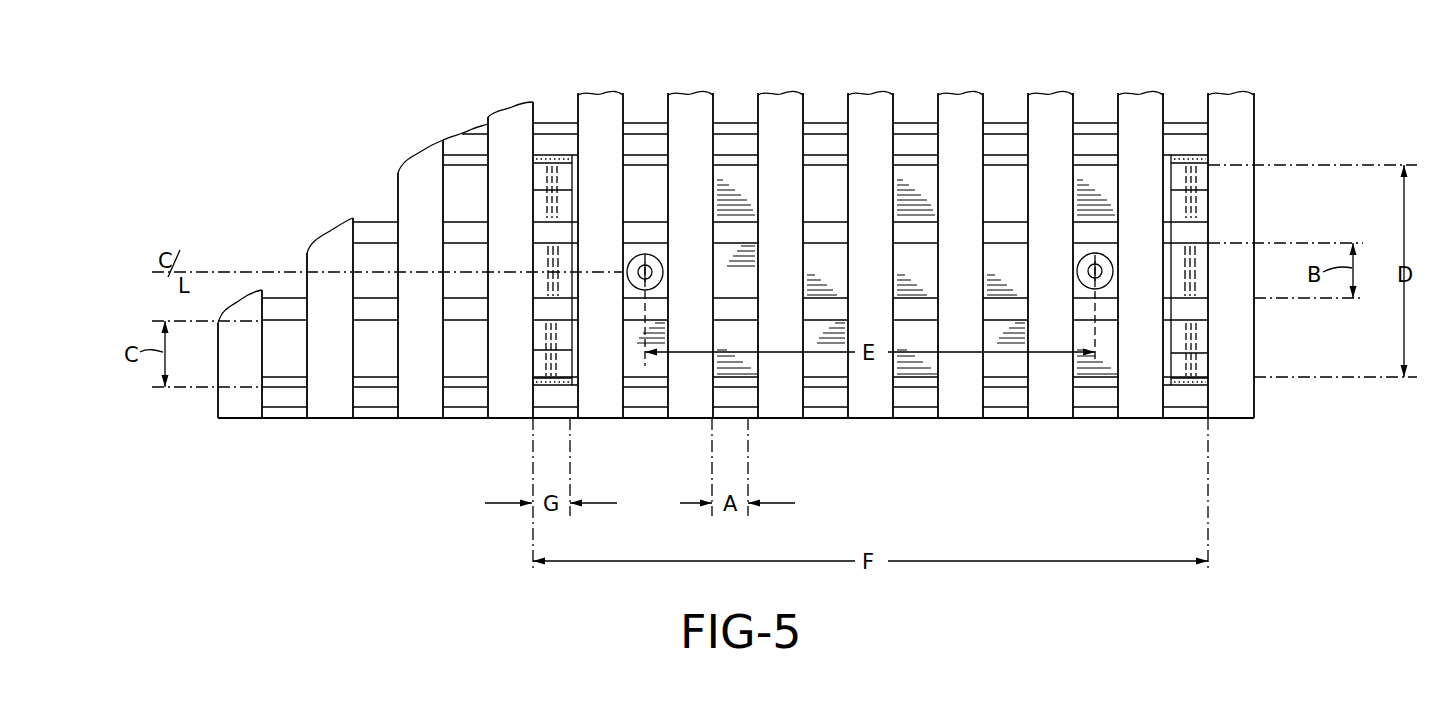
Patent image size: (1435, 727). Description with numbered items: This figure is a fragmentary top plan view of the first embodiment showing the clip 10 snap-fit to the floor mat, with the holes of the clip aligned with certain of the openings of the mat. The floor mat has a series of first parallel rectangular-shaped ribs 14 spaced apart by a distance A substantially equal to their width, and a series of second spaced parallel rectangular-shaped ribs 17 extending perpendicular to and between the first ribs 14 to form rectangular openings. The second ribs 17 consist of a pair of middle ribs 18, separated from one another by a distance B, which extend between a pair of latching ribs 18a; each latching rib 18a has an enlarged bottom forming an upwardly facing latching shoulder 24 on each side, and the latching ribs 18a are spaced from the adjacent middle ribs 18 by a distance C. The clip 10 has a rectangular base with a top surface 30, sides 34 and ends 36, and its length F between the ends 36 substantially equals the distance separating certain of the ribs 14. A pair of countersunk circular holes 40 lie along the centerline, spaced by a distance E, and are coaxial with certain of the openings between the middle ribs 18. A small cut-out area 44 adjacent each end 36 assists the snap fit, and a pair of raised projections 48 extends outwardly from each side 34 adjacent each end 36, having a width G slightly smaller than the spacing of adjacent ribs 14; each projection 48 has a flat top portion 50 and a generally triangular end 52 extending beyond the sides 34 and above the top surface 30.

The clip 10 is at (909, 368).
The first parallel rectangular-shaped ribs 14 is at (1240, 100).
The second spaced parallel rectangular-shaped ribs 17 is at (830, 143).
The middle ribs 18 is at (1198, 233).
The latching ribs 18a is at (1090, 140).
The latching shoulder 24 is at (1007, 128).
The top surface 30 is at (738, 190).
The sides 34 is at (918, 162).
The ends 36 is at (535, 363).
The countersunk circular holes 40 is at (646, 268).
The cut-out area 44 is at (545, 262).
The raised projections 48 is at (572, 183).
The flat top portion 50 is at (540, 178).
The triangular end 52 is at (551, 158).